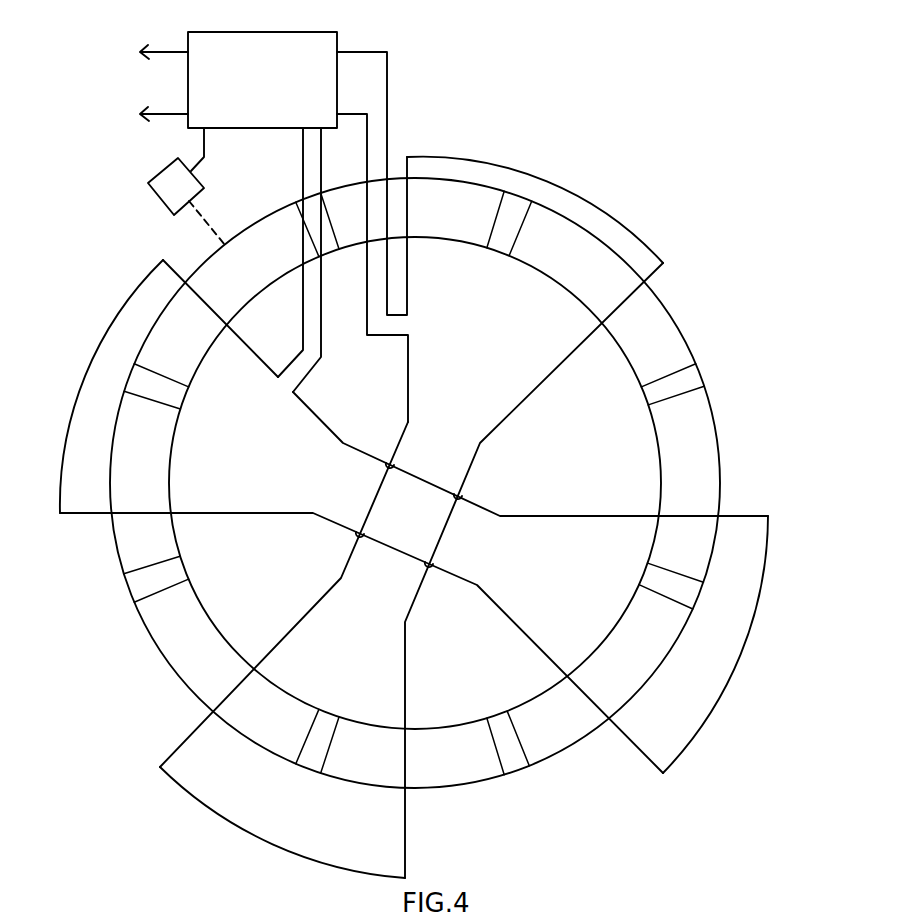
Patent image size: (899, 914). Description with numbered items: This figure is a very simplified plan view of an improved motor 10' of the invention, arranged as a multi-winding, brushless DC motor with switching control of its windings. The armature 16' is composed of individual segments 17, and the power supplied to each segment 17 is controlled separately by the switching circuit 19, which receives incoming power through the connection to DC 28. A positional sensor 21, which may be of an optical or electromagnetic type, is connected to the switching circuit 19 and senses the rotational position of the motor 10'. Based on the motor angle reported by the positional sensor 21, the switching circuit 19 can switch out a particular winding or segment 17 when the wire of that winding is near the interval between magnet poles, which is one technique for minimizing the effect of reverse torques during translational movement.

The motor 10' is at (414, 560).
The armature 16' is at (469, 483).
The segments 17 is at (621, 223).
The switching circuit 19 is at (318, 43).
The positional sensor 21 is at (168, 183).
The connection to DC 28 is at (152, 78).